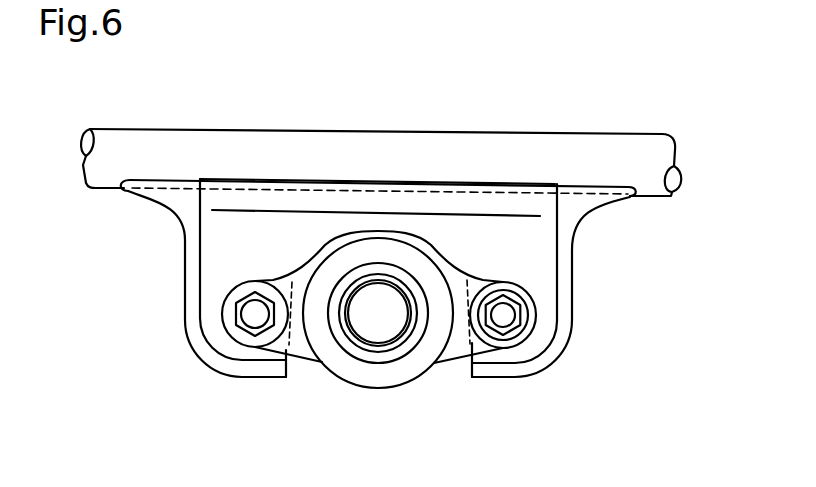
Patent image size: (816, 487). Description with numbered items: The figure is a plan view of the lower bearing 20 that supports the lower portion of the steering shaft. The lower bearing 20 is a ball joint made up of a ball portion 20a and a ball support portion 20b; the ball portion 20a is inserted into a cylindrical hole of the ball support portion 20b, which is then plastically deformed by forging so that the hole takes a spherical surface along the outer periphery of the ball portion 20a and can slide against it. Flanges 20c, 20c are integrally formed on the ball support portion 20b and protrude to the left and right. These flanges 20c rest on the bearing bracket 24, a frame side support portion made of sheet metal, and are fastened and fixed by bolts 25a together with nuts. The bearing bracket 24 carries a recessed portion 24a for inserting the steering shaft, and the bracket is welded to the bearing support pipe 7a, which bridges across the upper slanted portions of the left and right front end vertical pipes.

The bearing support pipe 7a is at (273, 130).
The lower bearing 20 is at (160, 311).
The ball portion 20a is at (390, 278).
The ball support portion 20b is at (436, 288).
The flange 20c is at (233, 300).
The bearing bracket 24 is at (573, 305).
The recessed portion 24a is at (362, 233).
The bolt 25a is at (252, 316).